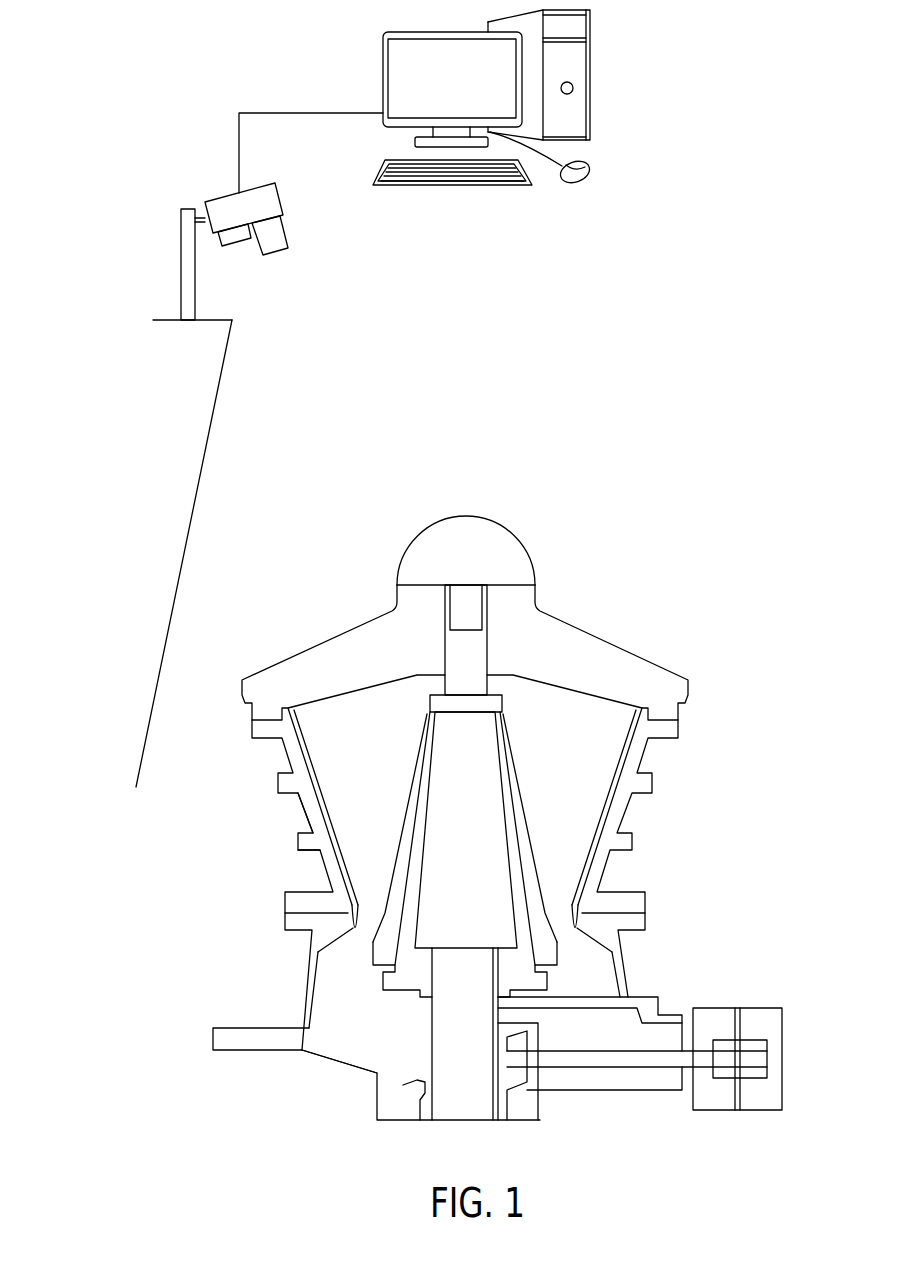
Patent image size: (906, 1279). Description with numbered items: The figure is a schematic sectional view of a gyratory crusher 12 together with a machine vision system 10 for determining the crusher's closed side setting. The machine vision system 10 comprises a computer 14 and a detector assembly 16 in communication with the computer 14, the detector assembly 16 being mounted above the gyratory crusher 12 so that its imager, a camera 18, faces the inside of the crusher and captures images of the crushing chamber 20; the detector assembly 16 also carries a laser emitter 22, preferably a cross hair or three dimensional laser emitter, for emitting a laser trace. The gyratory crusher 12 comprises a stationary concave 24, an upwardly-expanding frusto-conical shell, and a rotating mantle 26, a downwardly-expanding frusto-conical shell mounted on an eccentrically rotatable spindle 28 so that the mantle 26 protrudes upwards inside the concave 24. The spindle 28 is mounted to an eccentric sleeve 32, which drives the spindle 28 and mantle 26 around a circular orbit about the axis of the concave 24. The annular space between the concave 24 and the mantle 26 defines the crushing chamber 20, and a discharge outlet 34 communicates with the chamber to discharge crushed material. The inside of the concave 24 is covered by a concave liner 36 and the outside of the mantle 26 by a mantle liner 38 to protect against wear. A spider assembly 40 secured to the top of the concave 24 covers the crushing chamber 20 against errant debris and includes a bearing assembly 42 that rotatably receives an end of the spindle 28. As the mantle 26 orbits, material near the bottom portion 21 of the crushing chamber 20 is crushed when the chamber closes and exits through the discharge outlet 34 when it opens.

The machine vision system 10 is at (603, 342).
The gyratory crusher 12 is at (704, 601).
The computer 14 is at (522, 65).
The detector assembly 16 is at (264, 176).
The camera 18 is at (287, 248).
The crushing chamber 20 is at (353, 763).
The bottom portion 21 is at (377, 913).
The laser emitter 22 is at (237, 240).
The concave 24 is at (302, 840).
The mantle 26 is at (522, 905).
The spindle 28 is at (490, 842).
The eccentric sleeve 32 is at (430, 1035).
The discharge outlet 34 is at (340, 1030).
The concave liner 36 is at (325, 811).
The mantle liner 38 is at (373, 953).
The spider assembly 40 is at (660, 683).
The bearing assembly 42 is at (482, 612).